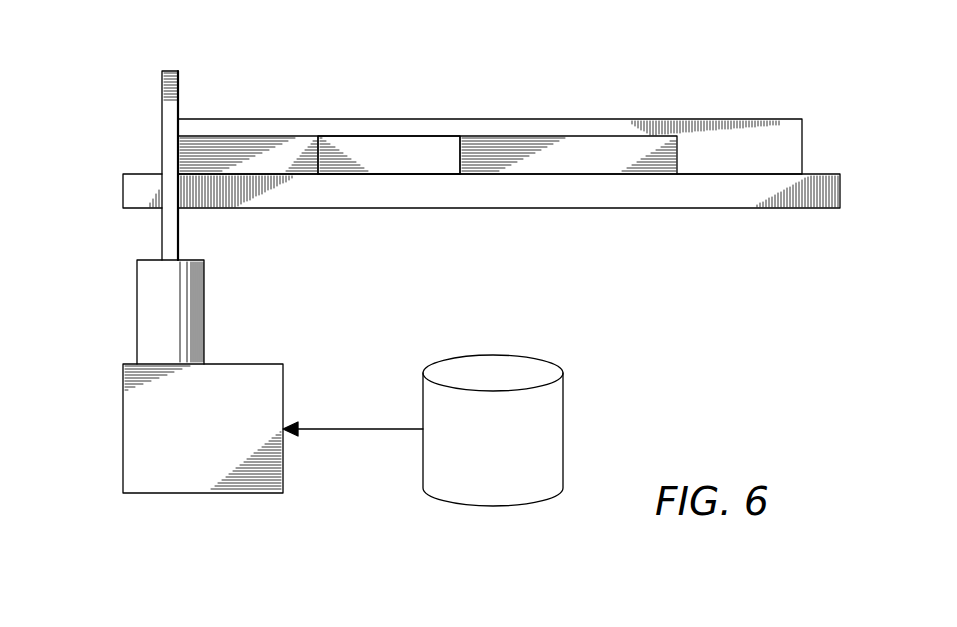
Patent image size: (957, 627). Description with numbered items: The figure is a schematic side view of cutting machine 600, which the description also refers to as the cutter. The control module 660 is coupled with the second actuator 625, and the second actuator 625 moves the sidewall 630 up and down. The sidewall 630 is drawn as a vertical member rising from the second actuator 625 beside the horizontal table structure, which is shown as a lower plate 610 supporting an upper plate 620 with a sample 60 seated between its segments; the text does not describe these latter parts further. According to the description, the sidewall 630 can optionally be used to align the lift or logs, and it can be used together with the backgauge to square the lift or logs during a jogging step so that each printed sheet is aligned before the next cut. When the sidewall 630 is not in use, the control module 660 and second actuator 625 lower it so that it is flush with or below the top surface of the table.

The cutting machine 600 is at (703, 88).
The lower plate / substrate holder 610 is at (700, 200).
The upper plate / sample stage 620 is at (533, 128).
The sample 60 is at (373, 149).
The sidewall 630 is at (160, 127).
The second actuator 625 is at (132, 418).
The control module 660 is at (566, 432).